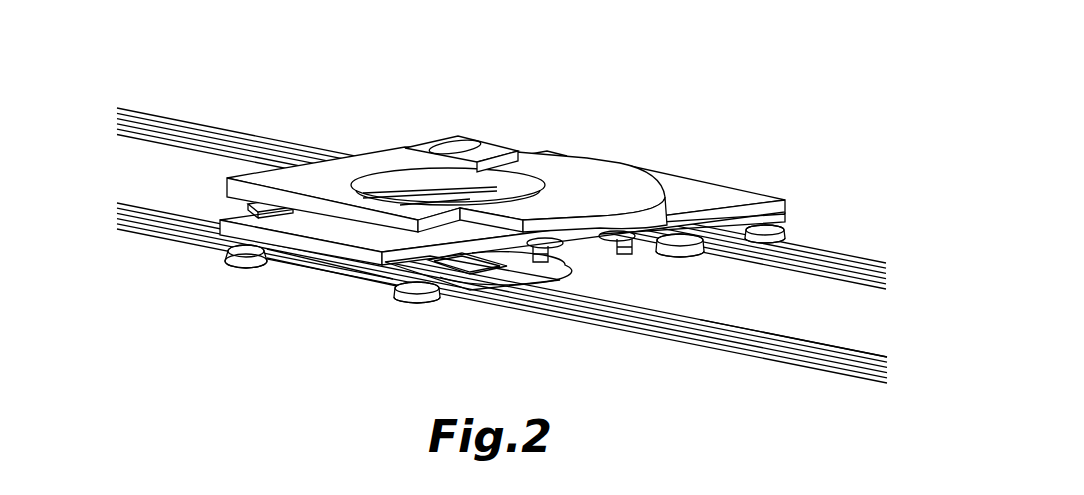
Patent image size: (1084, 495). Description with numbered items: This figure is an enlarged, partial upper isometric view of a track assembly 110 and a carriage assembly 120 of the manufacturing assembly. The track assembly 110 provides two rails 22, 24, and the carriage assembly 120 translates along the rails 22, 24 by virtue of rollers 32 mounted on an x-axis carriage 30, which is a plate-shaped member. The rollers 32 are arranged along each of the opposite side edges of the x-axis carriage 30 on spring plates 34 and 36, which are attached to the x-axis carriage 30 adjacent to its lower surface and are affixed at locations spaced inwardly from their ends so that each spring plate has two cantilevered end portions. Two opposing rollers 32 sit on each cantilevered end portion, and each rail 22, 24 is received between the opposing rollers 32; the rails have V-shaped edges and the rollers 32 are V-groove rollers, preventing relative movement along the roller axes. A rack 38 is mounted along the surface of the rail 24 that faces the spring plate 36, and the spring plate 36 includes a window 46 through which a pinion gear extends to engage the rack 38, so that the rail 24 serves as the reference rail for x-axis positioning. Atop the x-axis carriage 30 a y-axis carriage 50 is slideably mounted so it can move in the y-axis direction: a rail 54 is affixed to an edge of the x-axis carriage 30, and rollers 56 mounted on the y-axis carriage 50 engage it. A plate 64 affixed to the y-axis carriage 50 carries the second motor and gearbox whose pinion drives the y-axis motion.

The track assembly 110 is at (181, 86).
The carriage assembly 120 is at (727, 127).
The rail 22 is at (864, 263).
The rail 24 is at (790, 365).
The rack 38 is at (851, 355).
The x-axis carriage 30 is at (728, 198).
The y-axis carriage 50 is at (378, 162).
The plate 64 is at (509, 142).
The rail 54 is at (248, 210).
The spring plate 34 is at (783, 220).
The rollers 32 is at (268, 270).
The spring plate 36 is at (462, 281).
The window 46 is at (546, 265).
The rollers 56 is at (626, 258).